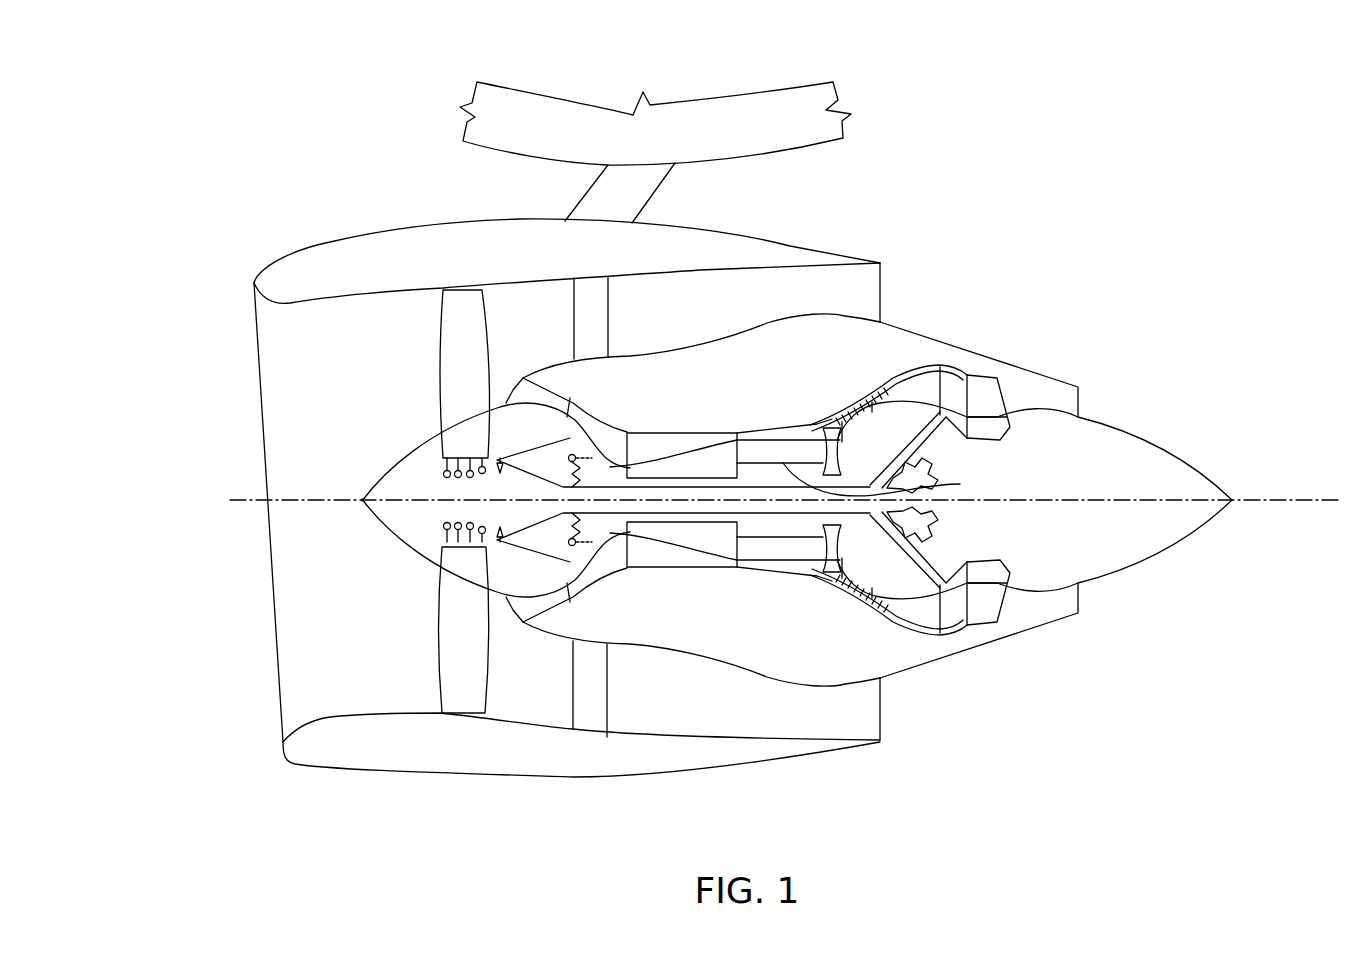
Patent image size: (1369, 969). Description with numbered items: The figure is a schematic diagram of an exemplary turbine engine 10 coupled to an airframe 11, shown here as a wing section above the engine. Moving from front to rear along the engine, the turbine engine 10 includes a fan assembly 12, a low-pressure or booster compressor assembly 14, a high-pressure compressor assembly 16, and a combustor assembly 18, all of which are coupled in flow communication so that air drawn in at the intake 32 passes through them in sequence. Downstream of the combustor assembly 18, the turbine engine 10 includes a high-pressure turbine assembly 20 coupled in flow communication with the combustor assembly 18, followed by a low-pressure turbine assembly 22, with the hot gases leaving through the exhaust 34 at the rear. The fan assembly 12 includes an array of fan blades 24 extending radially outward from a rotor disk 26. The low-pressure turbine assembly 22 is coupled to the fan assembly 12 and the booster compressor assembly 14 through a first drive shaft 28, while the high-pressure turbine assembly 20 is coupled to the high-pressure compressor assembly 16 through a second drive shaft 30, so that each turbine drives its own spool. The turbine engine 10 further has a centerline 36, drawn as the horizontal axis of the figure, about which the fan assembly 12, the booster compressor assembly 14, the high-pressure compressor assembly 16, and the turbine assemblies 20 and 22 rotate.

The turbine engine 10 is at (1016, 224).
The airframe 11 is at (707, 96).
The fan assembly 12 is at (488, 501).
The booster compressor assembly 14 is at (530, 365).
The high-pressure compressor assembly 16 is at (677, 425).
The combustor assembly 18 is at (787, 419).
The high-pressure turbine assembly 20 is at (836, 405).
The low-pressure turbine assembly 22 is at (914, 358).
The fan blades 24 is at (452, 385).
The rotor disk 26 is at (428, 491).
The first drive shaft 28 is at (614, 487).
The second drive shaft 30 is at (887, 480).
The intake 32 is at (214, 332).
The exhaust 34 is at (1103, 401).
The centerline 36 is at (1280, 500).